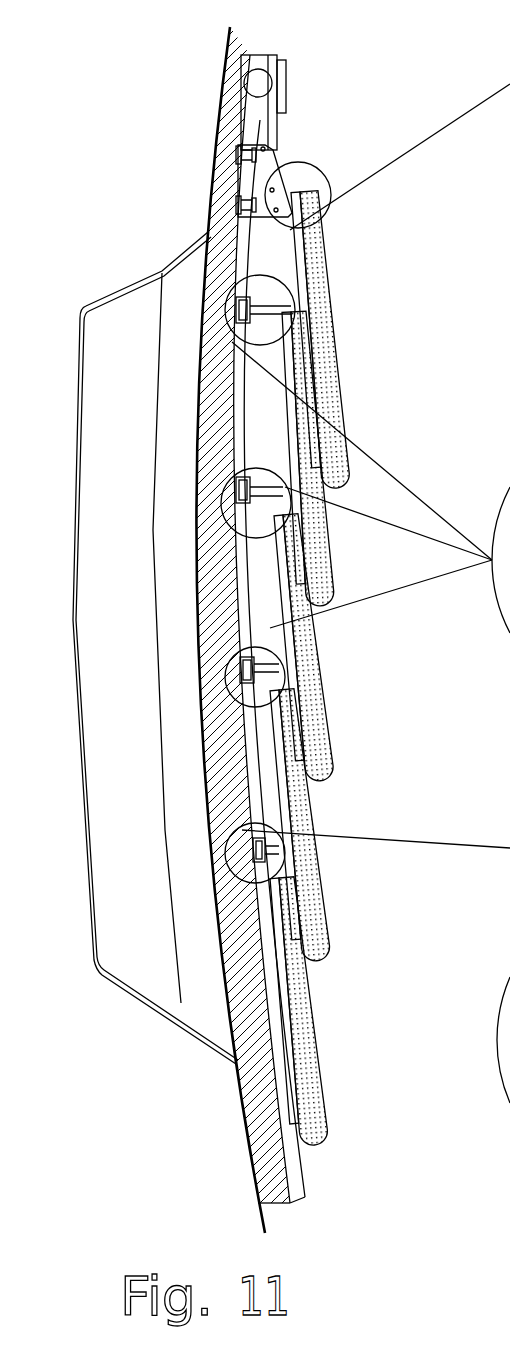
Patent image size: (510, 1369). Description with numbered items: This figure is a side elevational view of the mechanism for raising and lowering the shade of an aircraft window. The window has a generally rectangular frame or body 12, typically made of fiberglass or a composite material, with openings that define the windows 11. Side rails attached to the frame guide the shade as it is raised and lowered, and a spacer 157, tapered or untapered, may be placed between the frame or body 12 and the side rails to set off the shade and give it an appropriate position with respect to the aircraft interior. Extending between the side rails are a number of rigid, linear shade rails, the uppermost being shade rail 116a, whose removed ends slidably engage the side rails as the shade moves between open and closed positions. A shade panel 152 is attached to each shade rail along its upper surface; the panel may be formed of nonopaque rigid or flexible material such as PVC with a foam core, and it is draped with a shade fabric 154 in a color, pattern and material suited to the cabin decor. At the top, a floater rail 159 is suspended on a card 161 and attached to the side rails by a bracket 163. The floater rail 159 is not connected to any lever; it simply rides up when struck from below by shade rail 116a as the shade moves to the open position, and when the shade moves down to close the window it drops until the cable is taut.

The windows 11 is at (74, 648).
The frame or body 12 is at (119, 632).
The shade rail 116a is at (250, 298).
The shade panel 152 is at (324, 1108).
The shade fabric 154 is at (324, 921).
The spacer 157 is at (284, 1205).
The floater rail 159 is at (285, 226).
The card 161 is at (267, 124).
The bracket 163 is at (279, 166).